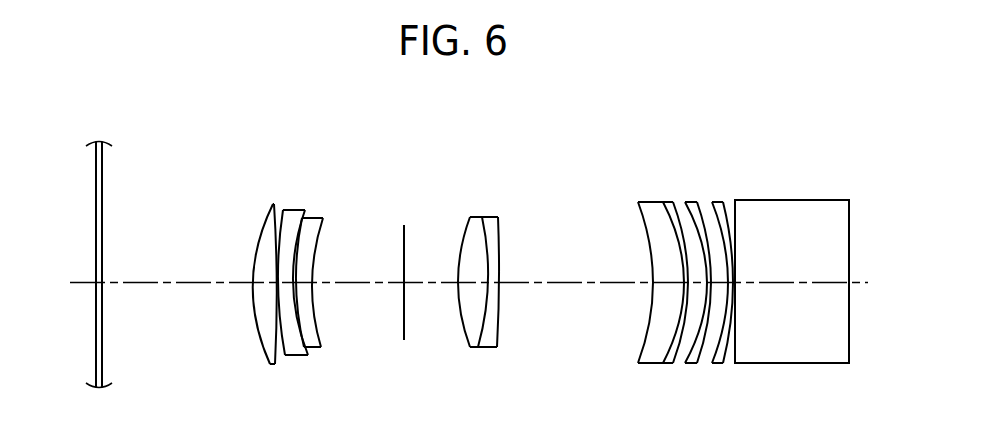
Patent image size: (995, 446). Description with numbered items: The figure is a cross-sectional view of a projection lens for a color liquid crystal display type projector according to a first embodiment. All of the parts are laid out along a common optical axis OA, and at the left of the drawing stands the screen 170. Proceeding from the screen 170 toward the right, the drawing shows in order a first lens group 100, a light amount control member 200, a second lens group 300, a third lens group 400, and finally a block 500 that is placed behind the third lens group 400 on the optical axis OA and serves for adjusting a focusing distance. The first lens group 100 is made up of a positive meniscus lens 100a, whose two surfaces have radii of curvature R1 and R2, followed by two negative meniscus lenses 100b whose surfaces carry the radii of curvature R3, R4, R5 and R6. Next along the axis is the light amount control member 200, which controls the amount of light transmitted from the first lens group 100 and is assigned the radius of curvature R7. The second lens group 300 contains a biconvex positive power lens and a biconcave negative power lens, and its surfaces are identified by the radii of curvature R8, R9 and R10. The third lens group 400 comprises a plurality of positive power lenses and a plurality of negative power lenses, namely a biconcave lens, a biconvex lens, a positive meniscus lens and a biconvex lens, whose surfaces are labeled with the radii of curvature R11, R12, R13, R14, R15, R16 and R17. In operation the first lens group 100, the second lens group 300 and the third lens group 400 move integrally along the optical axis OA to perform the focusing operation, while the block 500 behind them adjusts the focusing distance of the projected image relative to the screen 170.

The optical axis OA is at (449, 283).
The screen 170 is at (103, 378).
The first lens group 100 is at (266, 109).
The positive meniscus lens 100a is at (247, 266).
The negative meniscus lenses 100b is at (333, 266).
The light amount control member 200 is at (399, 244).
The second lens group 300 is at (455, 108).
The third lens group 400 is at (698, 108).
The block 500 is at (788, 200).
The radius of curvature R1 is at (261, 233).
The radius of curvature R2 is at (266, 219).
The radius of curvature R3 is at (295, 211).
The radius of curvature R4 is at (299, 221).
The radius of curvature R5 is at (306, 223).
The radius of curvature R6 is at (323, 228).
The radius of curvature R7 is at (403, 253).
The radius of curvature R8 is at (466, 231).
The radius of curvature R9 is at (486, 227).
The radius of curvature R10 is at (498, 231).
The radius of curvature R11 is at (642, 224).
The radius of curvature R12 is at (664, 222).
The radius of curvature R13 is at (679, 224).
The radius of curvature R14 is at (683, 364).
The radius of curvature R15 is at (697, 364).
The radius of curvature R16 is at (712, 207).
The radius of curvature R17 is at (725, 207).